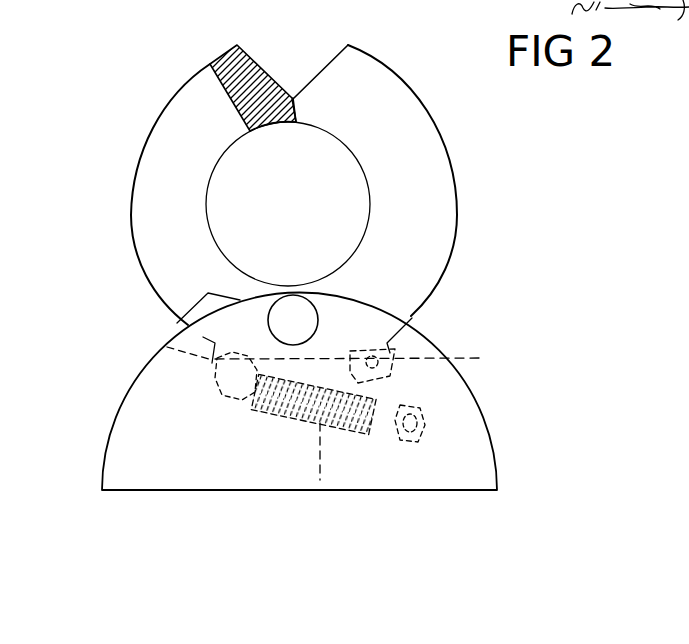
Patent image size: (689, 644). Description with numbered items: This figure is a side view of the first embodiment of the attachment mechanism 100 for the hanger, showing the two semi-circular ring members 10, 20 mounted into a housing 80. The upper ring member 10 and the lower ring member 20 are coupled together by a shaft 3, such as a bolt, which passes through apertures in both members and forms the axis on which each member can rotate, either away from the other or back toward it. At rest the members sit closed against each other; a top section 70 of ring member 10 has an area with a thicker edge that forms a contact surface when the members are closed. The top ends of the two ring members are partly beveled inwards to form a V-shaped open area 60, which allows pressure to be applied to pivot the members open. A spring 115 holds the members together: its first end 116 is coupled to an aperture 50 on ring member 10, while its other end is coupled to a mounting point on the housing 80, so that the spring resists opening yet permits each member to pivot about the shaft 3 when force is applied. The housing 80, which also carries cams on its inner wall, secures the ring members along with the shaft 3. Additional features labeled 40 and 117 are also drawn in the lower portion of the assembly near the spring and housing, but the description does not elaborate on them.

The attachment mechanism 100 is at (105, 115).
The semi-circular ring member 10 is at (428, 227).
The semi-circular ring member 20 is at (163, 226).
The top section 70 is at (230, 62).
The V-shaped open area 60 is at (303, 51).
The housing 80 is at (425, 450).
The shaft 3 is at (291, 320).
The aperture 50 is at (167, 346).
The bracket 40 is at (366, 350).
The first end 116 is at (250, 405).
The nut 117 is at (423, 403).
The spring 115 is at (320, 490).